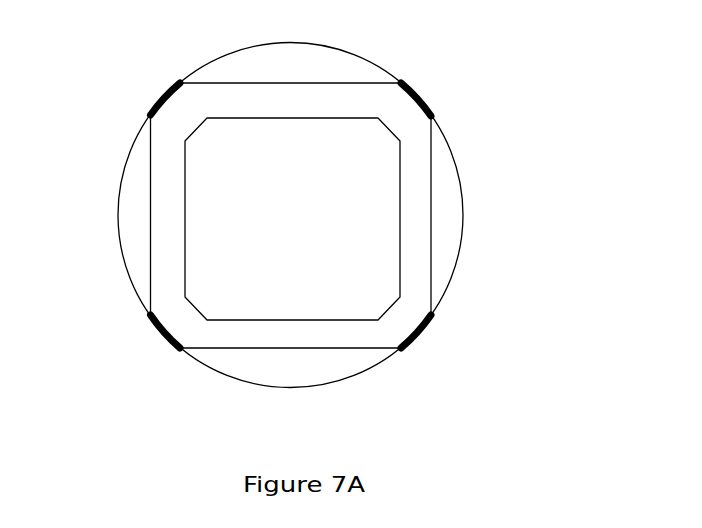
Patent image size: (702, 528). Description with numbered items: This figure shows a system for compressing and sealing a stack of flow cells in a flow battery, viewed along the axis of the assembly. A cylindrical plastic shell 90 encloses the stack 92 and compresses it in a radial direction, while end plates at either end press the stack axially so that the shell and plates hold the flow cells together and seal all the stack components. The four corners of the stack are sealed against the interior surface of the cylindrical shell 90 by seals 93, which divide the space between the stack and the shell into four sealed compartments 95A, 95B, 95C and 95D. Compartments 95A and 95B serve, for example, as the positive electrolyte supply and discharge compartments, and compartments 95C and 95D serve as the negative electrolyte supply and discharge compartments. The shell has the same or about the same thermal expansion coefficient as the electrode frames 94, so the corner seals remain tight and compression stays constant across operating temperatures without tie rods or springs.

The cylindrical plastic shell 90 is at (457, 270).
The stack 92 is at (148, 272).
The seals 93 is at (418, 335).
The electrode frames 94 is at (417, 172).
The sealed compartment 95A is at (295, 65).
The sealed compartment 95B is at (268, 367).
The sealed compartment 95C is at (142, 212).
The sealed compartment 95D is at (440, 212).